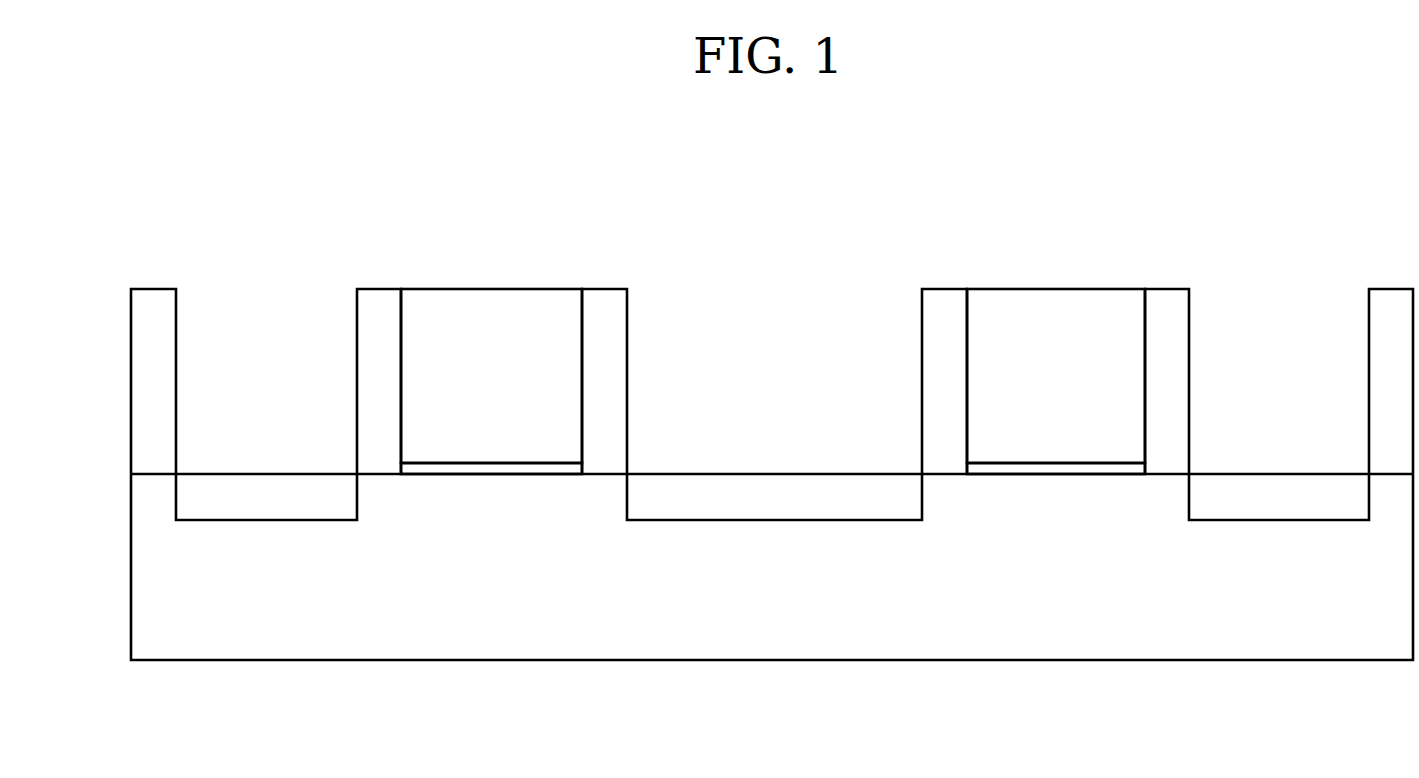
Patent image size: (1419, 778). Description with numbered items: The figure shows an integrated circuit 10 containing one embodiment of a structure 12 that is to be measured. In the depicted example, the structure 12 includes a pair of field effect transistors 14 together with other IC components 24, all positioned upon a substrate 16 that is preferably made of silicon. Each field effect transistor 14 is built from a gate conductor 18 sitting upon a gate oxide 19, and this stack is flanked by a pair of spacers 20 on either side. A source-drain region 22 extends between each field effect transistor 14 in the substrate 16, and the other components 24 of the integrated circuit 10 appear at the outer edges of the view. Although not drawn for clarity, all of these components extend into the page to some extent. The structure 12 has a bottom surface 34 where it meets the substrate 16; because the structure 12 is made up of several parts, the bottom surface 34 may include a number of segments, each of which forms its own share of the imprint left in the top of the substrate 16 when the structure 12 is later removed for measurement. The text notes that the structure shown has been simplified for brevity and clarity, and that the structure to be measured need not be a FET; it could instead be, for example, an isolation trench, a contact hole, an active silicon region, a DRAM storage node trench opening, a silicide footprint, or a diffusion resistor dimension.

The integrated circuit 10 is at (565, 678).
The structure to be measured 12 is at (742, 240).
The field effect transistor 14 is at (338, 280).
The substrate 16 is at (771, 596).
The gate conductor 18 is at (474, 396).
The gate oxide 19 is at (465, 467).
The spacer 20 is at (370, 448).
The source-drain region 22 is at (285, 497).
The other IC component 24 is at (148, 298).
The bottom surface 34 is at (275, 533).